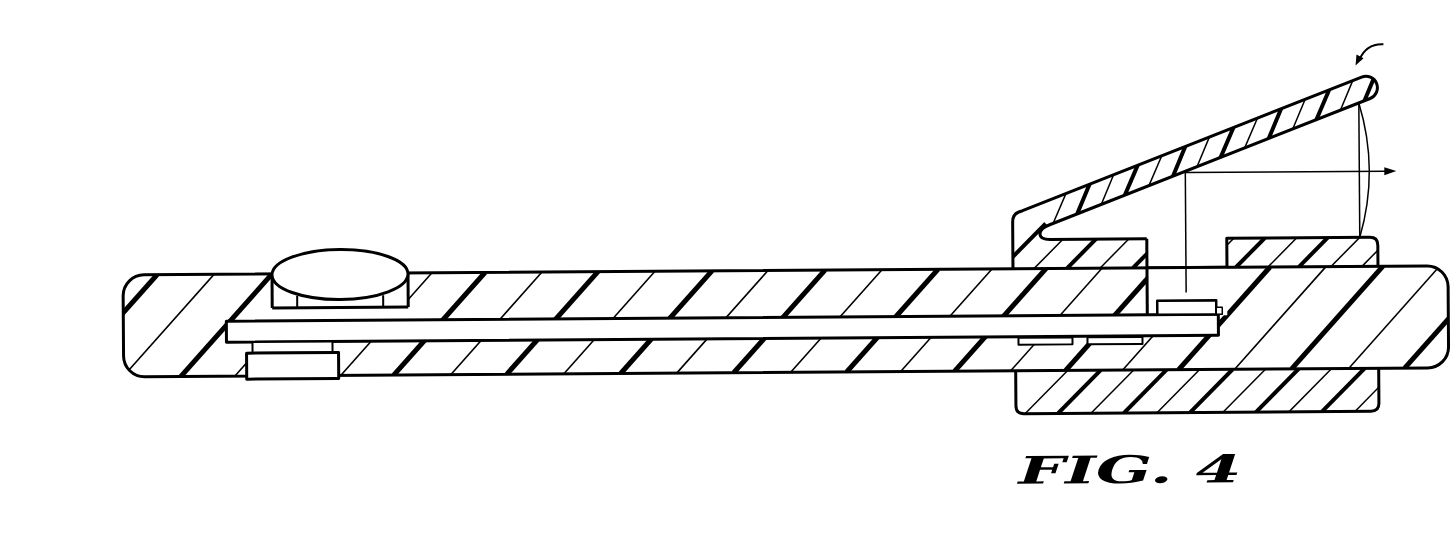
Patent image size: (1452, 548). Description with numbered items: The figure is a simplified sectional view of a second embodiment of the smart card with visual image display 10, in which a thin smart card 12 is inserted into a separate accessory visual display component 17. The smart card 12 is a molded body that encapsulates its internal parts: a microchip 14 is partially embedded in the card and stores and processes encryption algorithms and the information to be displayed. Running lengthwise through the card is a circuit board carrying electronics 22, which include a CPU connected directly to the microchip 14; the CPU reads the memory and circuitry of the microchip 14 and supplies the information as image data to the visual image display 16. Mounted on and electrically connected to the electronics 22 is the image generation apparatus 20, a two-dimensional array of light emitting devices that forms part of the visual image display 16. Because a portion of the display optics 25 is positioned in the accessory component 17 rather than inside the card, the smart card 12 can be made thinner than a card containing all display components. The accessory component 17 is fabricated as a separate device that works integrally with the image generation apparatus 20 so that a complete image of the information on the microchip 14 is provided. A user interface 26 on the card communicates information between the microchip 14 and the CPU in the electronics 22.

The smart card with visual image display 10 is at (971, 485).
The smart card 12 is at (569, 408).
The microchip 14 is at (291, 380).
The visual image display 16 is at (1130, 147).
The accessory visual display component 17 is at (1389, 46).
The image generation apparatus 20 is at (1223, 316).
The electronics 22 is at (642, 325).
The display optics 25 is at (1370, 160).
The user interface 26 is at (342, 250).